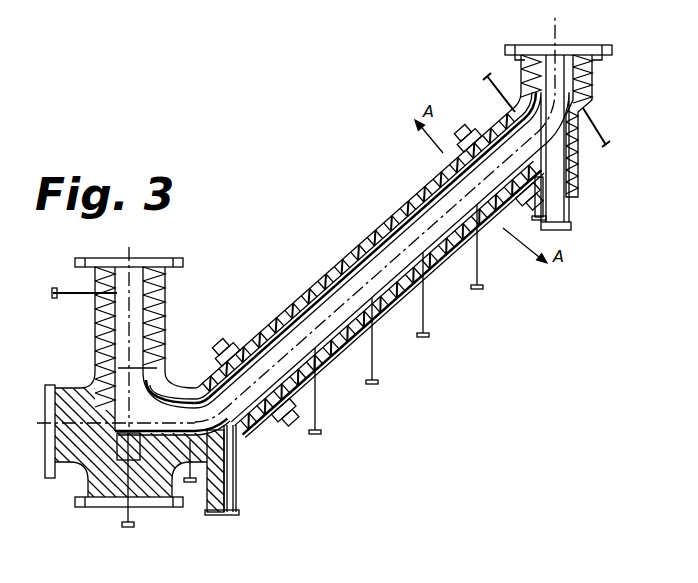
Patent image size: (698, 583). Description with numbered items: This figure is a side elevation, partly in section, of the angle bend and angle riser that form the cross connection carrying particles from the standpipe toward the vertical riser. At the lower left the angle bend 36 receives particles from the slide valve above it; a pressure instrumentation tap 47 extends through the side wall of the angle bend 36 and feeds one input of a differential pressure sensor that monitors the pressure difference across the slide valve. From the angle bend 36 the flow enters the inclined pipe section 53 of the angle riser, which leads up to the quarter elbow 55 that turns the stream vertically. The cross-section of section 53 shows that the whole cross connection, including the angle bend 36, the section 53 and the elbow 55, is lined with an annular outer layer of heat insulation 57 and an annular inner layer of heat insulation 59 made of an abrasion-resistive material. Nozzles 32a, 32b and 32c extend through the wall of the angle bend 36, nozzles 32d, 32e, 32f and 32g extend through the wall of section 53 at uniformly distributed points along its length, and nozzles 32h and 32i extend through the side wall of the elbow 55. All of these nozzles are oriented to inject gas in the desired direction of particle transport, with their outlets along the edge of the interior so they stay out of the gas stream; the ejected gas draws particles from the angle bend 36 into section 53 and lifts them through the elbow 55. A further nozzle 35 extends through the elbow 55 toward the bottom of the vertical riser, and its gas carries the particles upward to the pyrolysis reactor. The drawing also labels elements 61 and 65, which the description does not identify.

The nozzle 32a is at (128, 527).
The nozzle 32b is at (190, 482).
The nozzle 32c is at (238, 512).
The nozzle 32d is at (321, 432).
The nozzle 32e is at (378, 382).
The nozzle 32f is at (429, 335).
The nozzle 32g is at (483, 287).
The nozzle 32h is at (545, 216).
The nozzle 32i is at (609, 144).
The nozzle 35 is at (563, 215).
The angle bend 36 is at (167, 297).
The pressure instrumentation tap 47 is at (55, 293).
The pipe section 53 is at (366, 236).
The quarter elbow 55 is at (593, 88).
The annular outer layer of heat insulation 57 is at (440, 172).
The annular inner layer of heat insulation 59 is at (420, 186).
The inner outlet pipe 61 is at (578, 158).
The bolt 65 is at (487, 72).